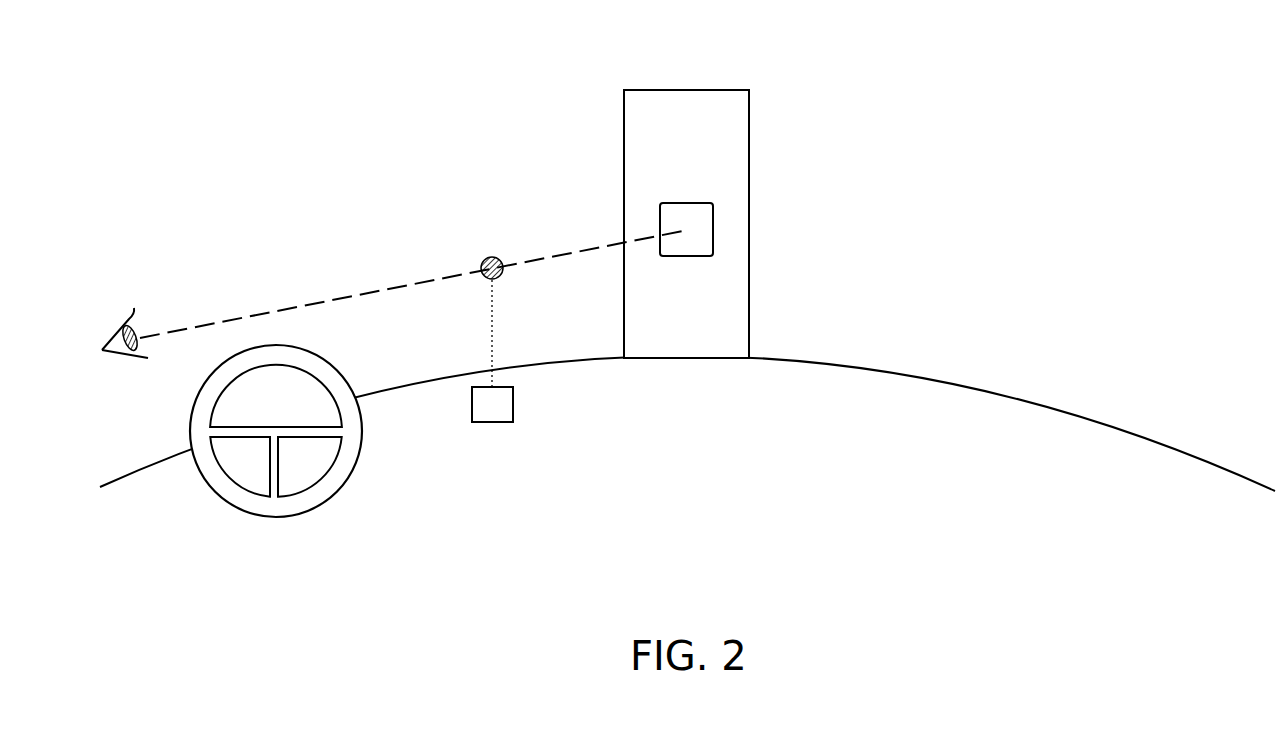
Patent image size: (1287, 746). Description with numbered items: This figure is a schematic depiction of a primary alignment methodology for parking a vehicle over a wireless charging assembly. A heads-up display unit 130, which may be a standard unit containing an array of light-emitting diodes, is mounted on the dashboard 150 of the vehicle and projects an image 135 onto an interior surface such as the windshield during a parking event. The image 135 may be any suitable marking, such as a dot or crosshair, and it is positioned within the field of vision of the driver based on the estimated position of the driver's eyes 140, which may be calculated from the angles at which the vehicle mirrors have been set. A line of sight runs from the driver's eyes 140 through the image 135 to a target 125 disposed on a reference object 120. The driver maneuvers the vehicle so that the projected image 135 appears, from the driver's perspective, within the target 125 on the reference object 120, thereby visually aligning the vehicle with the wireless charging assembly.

The reference object 120 is at (738, 68).
The target 125 is at (713, 222).
The heads-up display (HUD) unit 130 is at (519, 457).
The image 135 is at (492, 257).
The driver's eyes 140 is at (103, 318).
The dashboard 150 is at (707, 433).